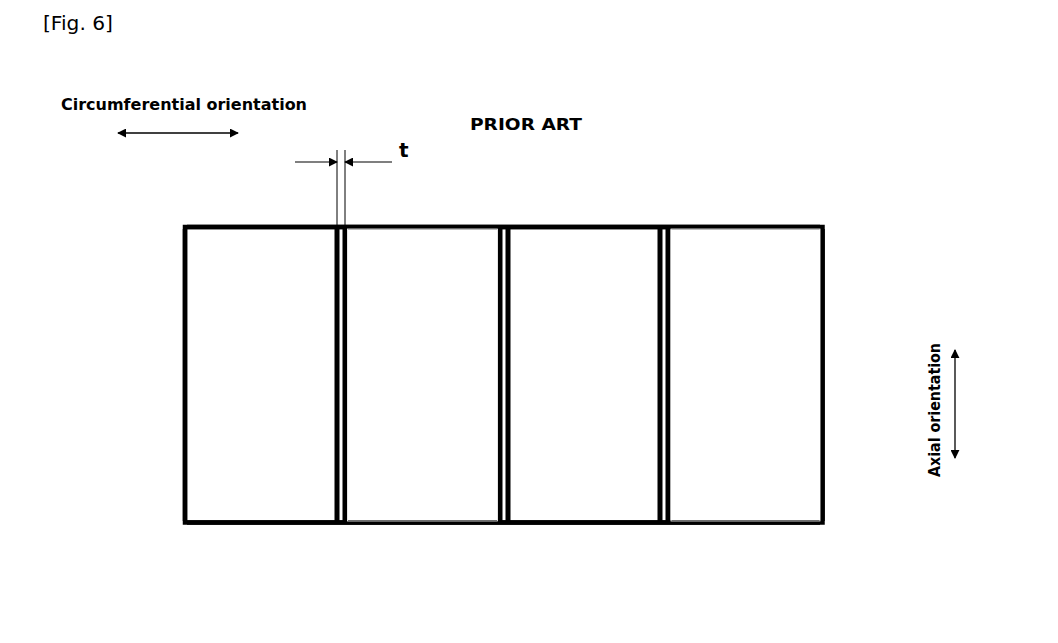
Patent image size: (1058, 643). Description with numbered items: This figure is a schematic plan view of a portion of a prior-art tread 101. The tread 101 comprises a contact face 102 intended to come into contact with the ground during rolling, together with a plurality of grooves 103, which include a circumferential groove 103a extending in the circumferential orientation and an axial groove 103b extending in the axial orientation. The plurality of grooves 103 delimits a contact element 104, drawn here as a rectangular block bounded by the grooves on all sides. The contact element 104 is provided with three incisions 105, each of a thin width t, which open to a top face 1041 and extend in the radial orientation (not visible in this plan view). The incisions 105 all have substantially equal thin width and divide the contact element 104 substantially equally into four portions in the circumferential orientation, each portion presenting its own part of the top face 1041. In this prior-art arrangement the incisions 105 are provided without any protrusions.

The tread 101 is at (662, 156).
The contact face 102 is at (713, 512).
The grooves 103 is at (502, 375).
The circumferential groove 103a is at (757, 213).
The axial groove 103b is at (168, 298).
The contact element 104 is at (423, 527).
The top face 1041 is at (295, 380).
The incisions 105 is at (342, 525).